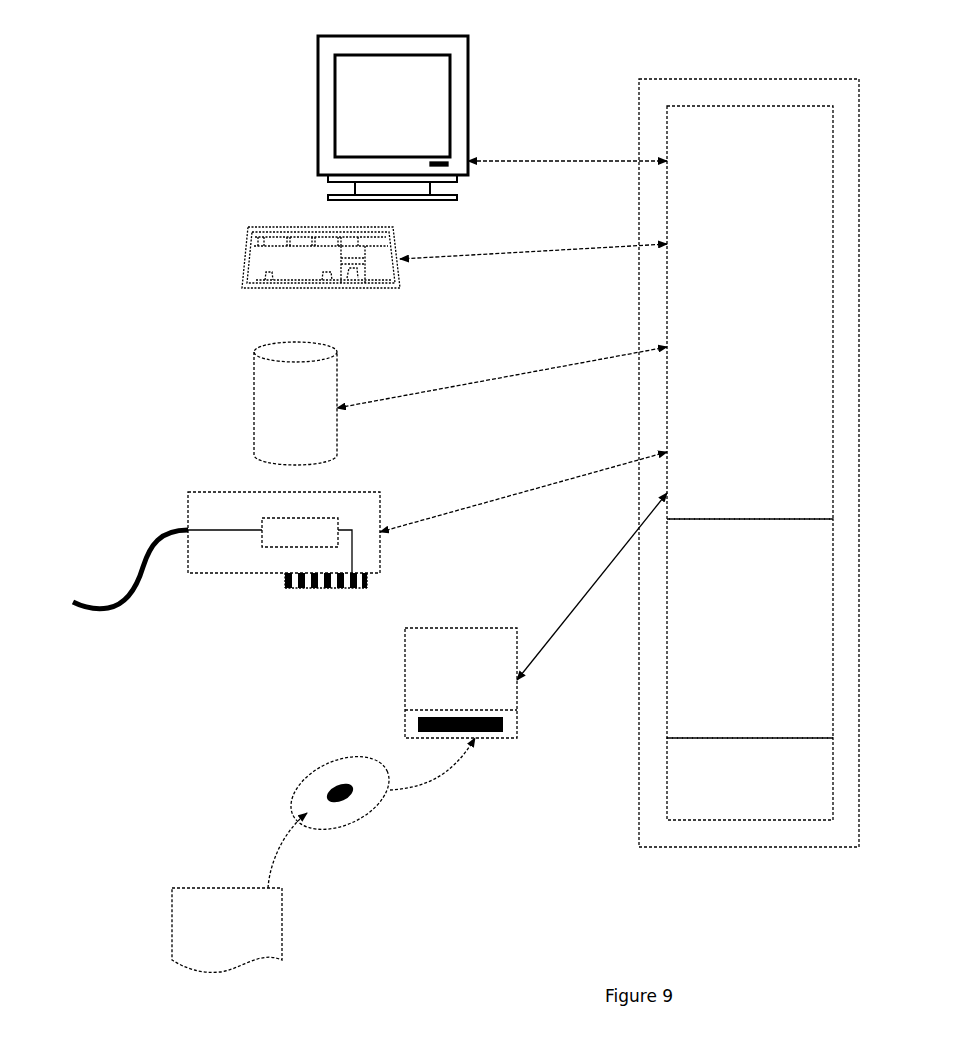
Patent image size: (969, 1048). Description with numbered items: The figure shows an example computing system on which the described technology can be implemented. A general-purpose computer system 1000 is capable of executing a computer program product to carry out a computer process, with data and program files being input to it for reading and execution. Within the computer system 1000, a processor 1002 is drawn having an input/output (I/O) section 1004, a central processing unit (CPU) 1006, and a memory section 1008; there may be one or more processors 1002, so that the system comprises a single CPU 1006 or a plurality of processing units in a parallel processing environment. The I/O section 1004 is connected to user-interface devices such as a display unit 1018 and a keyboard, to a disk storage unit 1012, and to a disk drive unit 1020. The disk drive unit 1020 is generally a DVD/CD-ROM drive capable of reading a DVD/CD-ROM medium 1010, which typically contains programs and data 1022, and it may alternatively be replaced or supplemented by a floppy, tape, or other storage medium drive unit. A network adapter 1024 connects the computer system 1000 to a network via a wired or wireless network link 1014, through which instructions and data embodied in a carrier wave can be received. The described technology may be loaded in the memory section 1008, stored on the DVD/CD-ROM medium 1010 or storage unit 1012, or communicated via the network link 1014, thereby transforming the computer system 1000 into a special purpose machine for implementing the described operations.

The general-purpose computer system 1000 is at (520, 907).
The processor 1002 is at (639, 120).
The input/output (I/O) section 1004 is at (750, 312).
The central processing unit (CPU) 1006 is at (750, 628).
The memory section 1008 is at (750, 779).
The DVD/CD-ROM medium 1010 is at (325, 755).
The disk storage unit 1012 is at (254, 368).
The network link 1014 is at (130, 607).
The display unit 1018 is at (312, 135).
The disk drive unit 1020 is at (405, 698).
The programs and data 1022 is at (282, 930).
The network adapter 1024 is at (200, 492).